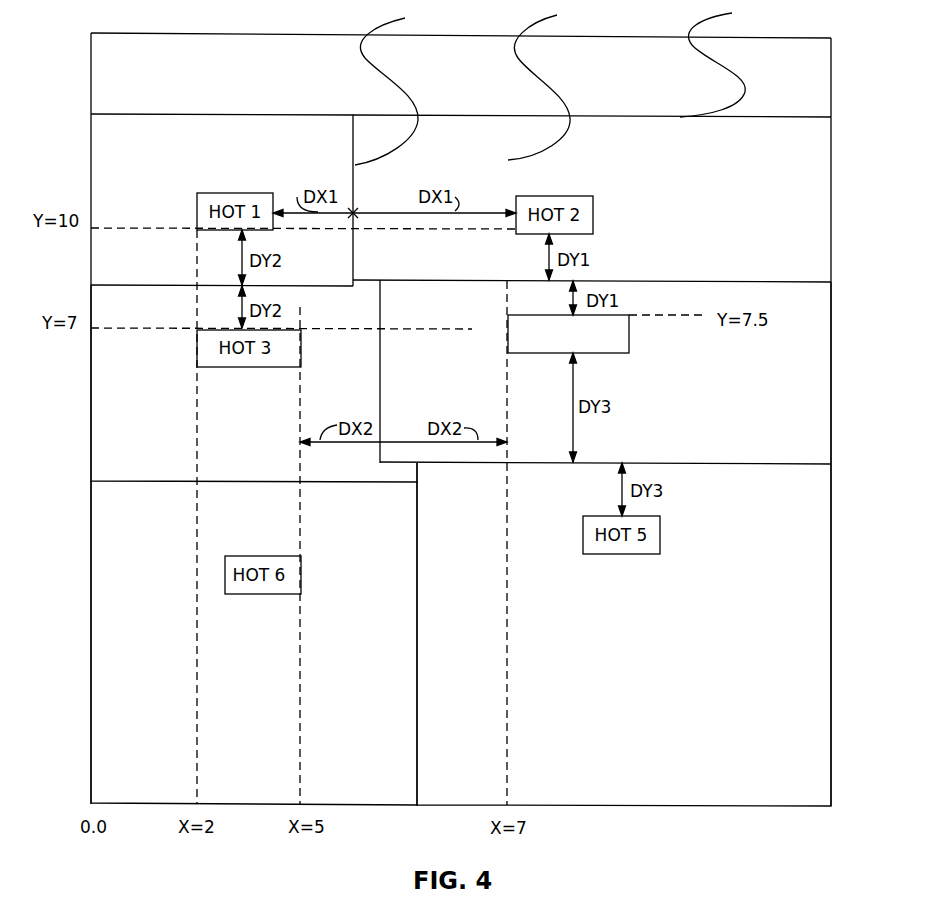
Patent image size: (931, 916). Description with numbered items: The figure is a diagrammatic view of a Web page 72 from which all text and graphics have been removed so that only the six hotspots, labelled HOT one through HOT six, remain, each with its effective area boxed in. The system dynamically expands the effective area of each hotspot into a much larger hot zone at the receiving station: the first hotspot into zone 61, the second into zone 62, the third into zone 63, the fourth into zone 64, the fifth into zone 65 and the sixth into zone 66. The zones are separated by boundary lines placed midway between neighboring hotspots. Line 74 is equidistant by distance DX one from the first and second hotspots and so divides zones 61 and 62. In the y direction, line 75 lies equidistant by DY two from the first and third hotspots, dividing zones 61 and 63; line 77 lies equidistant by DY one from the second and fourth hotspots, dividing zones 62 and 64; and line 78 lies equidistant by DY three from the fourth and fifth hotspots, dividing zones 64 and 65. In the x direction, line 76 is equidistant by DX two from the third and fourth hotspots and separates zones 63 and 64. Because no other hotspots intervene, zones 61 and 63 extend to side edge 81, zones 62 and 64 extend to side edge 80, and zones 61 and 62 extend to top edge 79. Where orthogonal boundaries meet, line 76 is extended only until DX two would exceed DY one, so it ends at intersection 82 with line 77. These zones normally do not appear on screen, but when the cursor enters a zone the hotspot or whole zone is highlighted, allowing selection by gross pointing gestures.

The zone 61 is at (155, 168).
The zone 62 is at (754, 197).
The zone 63 is at (168, 416).
The zone 64 is at (720, 408).
The zone 65 is at (671, 663).
The zone 66 is at (264, 666).
The Web page 72 is at (545, 84).
The line 74 is at (393, 86).
The line 75 is at (117, 285).
The line 76 is at (383, 298).
The line 77 is at (688, 281).
The line 78 is at (715, 463).
The top edge 79 is at (725, 63).
The side edge 80 is at (831, 183).
The side edge 81 is at (90, 168).
The intersection 82 is at (380, 295).